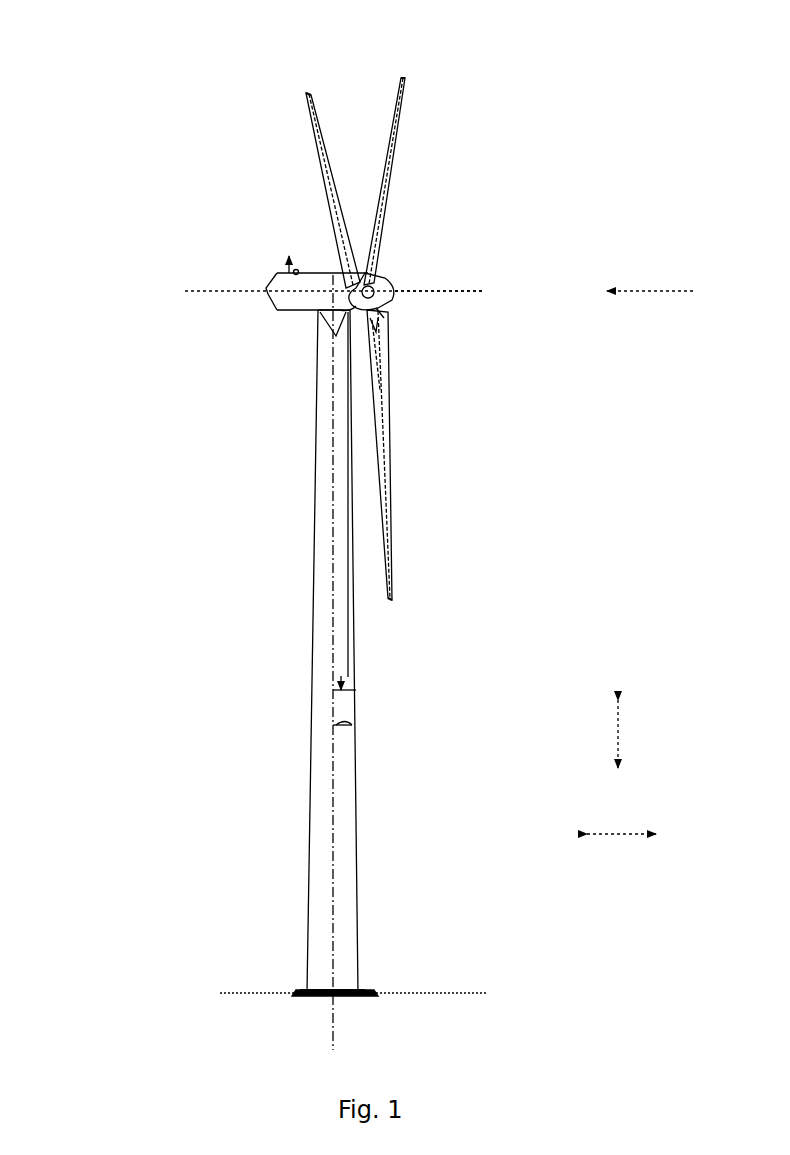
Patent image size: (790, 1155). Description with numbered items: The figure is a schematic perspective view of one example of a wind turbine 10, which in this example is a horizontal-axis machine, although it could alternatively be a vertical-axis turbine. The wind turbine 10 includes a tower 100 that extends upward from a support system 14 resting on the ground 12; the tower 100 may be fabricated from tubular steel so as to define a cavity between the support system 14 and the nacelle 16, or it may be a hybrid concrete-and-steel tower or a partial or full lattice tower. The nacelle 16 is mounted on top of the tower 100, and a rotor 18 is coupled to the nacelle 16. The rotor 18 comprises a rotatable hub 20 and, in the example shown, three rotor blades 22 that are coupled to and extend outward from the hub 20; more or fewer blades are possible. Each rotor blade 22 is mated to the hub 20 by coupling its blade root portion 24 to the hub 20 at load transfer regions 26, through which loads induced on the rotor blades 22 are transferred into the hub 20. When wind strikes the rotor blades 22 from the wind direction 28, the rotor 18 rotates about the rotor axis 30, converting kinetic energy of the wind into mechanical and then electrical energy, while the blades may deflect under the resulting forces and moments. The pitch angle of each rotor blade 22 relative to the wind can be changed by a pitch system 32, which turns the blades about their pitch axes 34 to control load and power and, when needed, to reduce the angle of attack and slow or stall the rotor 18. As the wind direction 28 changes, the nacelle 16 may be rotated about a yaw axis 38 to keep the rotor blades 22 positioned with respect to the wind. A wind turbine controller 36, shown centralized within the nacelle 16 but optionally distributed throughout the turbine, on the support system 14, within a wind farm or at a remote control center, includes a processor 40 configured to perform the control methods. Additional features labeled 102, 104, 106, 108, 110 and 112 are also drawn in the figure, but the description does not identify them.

The wind turbine 10 is at (117, 100).
The ground 12 is at (240, 993).
The support system 14 is at (300, 990).
The nacelle 16 is at (295, 308).
The rotor 18 is at (403, 202).
The rotatable hub 20 is at (393, 284).
The rotor blade 22 is at (325, 153).
The blade root portion 24 is at (388, 386).
The load transfer regions 26 is at (385, 310).
The wind direction 28 is at (668, 291).
The rotor axis 30 is at (470, 295).
The pitch system 32 is at (380, 322).
The pitch axes 34 is at (306, 96).
The wind turbine controller 36 is at (320, 340).
The yaw axis 38 is at (355, 690).
The processor 40 is at (336, 262).
The tower 100 is at (318, 625).
The tower top 102 is at (318, 312).
The tower base 104 is at (358, 992).
The tower segment 106 is at (340, 726).
The tower wall 108 is at (312, 795).
The vertical direction 110 is at (620, 742).
The horizontal direction 112 is at (622, 830).